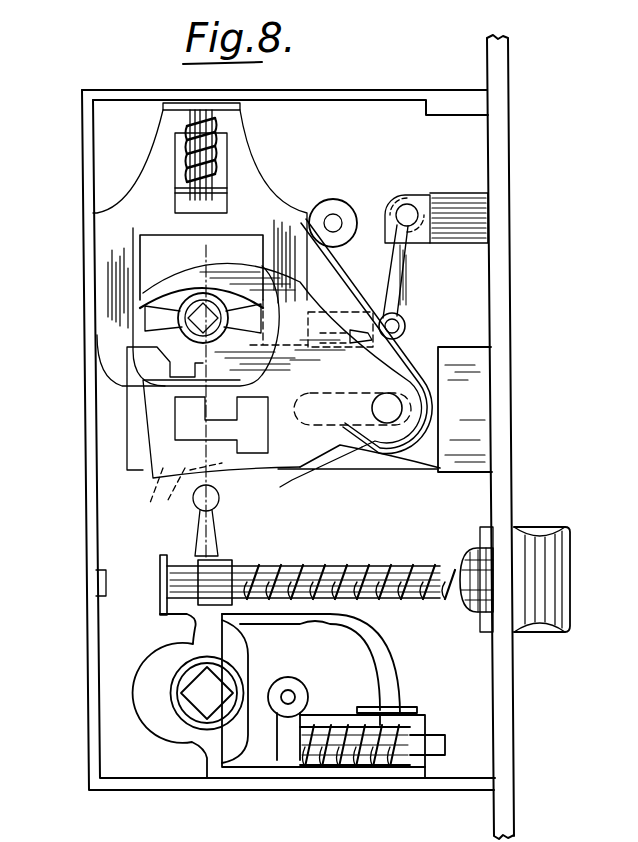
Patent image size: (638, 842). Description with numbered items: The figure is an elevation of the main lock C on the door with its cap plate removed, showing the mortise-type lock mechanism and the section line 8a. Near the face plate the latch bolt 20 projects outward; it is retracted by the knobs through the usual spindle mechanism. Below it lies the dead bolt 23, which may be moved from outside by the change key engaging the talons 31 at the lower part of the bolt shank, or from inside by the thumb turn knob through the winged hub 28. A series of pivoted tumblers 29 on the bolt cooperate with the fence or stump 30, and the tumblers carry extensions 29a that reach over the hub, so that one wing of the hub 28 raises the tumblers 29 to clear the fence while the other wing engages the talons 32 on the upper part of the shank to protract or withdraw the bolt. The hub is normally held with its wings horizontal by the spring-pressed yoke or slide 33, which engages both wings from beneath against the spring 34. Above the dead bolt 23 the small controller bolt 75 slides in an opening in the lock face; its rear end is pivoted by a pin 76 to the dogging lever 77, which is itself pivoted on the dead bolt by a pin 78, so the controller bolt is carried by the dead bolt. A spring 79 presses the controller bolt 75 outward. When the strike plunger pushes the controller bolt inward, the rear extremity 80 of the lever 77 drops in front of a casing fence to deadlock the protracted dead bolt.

The section line 8a- 8a is at (206, 398).
The latch bolt 20 is at (542, 612).
The dead bolt 23 is at (474, 422).
The winged hub 28 is at (163, 318).
The pivoted tumblers 29 is at (293, 458).
The extensions 29a is at (160, 268).
The fence or stump 30 is at (180, 410).
The talons 31 is at (180, 501).
The talons 32 is at (178, 358).
The spring-pressed yoke or slide 33 is at (200, 201).
The spring 34 is at (215, 158).
The controller bolt 75 is at (476, 193).
The pin 76 is at (410, 212).
The dogging lever 77 is at (376, 306).
The pin 78 is at (402, 321).
The spring 79 is at (388, 245).
The rear extremity of lever 80 is at (352, 330).
The lock on the door C is at (345, 131).